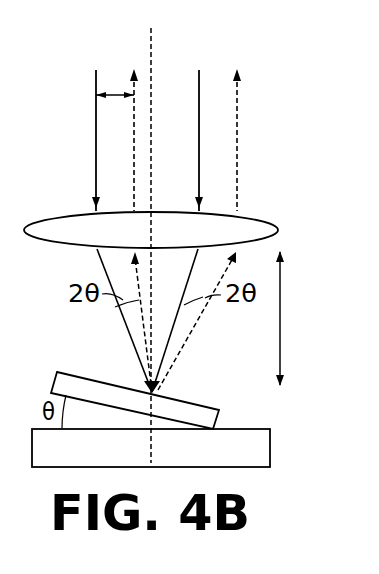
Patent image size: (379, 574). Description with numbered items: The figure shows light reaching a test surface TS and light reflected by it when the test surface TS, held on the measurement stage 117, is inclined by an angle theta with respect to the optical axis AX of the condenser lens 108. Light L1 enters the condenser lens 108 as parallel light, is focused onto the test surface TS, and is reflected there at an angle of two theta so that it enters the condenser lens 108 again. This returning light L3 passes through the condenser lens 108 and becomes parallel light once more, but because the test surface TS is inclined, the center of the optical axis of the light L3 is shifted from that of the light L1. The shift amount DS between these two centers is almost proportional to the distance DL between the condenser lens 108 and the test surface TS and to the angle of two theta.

The condenser lens 108 is at (278, 231).
The measurement stage 117 is at (262, 455).
The test surface TS is at (212, 426).
The light L1 is at (96, 126).
The light L3 is at (134, 177).
The optical axis AX is at (155, 38).
The shift amount DS is at (131, 93).
The distance DL is at (282, 318).